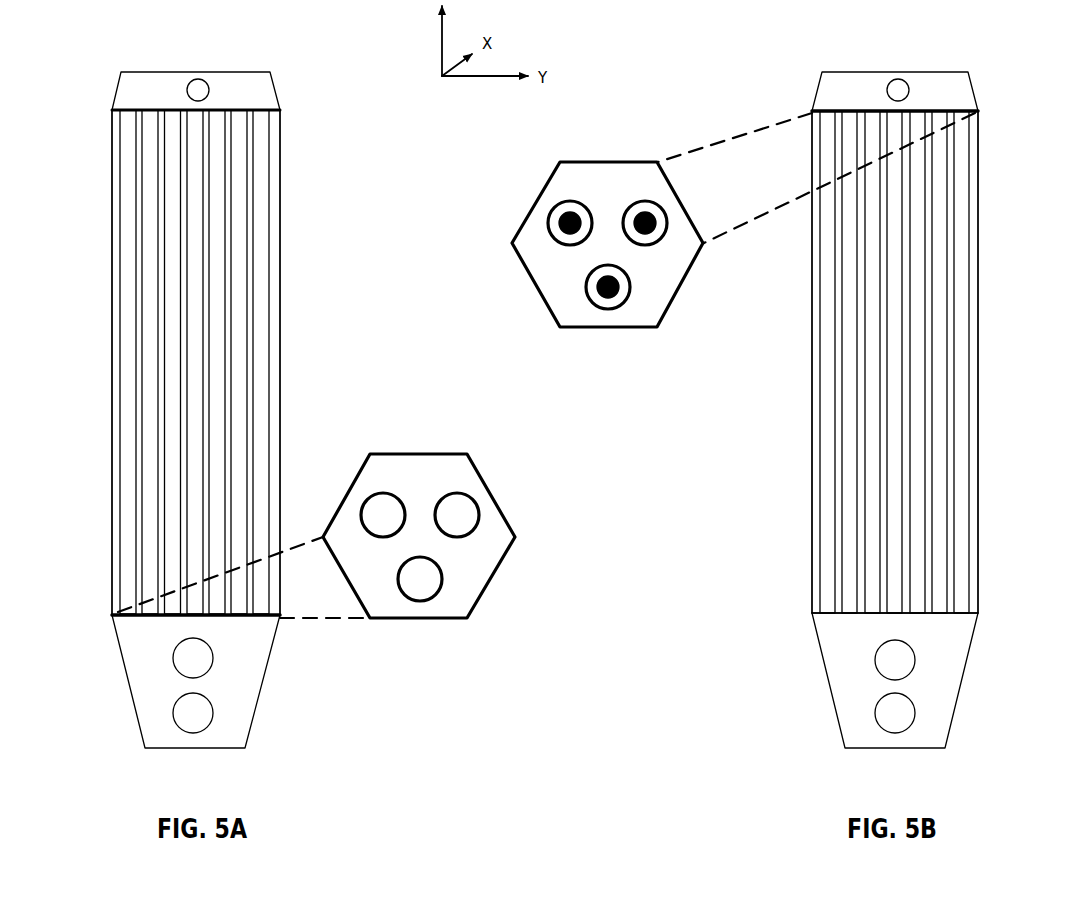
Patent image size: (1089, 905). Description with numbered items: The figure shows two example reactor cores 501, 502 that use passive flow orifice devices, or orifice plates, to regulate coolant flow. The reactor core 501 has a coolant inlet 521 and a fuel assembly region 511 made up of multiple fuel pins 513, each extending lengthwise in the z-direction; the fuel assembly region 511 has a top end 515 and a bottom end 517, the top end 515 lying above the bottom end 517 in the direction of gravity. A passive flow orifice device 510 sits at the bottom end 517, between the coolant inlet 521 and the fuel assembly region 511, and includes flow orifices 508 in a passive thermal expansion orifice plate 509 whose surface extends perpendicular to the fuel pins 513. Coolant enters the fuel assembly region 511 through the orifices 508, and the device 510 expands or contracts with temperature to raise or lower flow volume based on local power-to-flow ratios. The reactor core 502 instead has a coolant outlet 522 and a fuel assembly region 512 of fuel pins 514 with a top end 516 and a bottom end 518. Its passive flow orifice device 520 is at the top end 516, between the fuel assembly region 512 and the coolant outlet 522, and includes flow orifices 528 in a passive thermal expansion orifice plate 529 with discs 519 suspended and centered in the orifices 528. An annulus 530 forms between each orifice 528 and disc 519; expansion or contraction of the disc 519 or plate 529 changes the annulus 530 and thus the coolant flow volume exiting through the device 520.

In FIG. 5A, the reactor core 501 is at (86, 90).
In FIG. 5B, the reactor core 502 is at (756, 86).
In FIG. 5A, the flow orifices 508 is at (420, 586).
In FIG. 5A, the passive thermal expansion orifice plate 509 is at (476, 562).
In FIG. 5A, the passive flow orifice device 510 is at (487, 483).
In FIG. 5A, the fuel assembly region 511 is at (292, 214).
In FIG. 5B, the fuel assembly region 512 is at (988, 220).
In FIG. 5A, the fuel pins 513 is at (272, 355).
In FIG. 5B, the fuel pins 514 is at (976, 362).
In FIG. 5A, the top end 515 is at (245, 98).
In FIG. 5B, the top end 516 is at (838, 96).
In FIG. 5A, the bottom end 517 is at (243, 631).
In FIG. 5B, the bottom end 518 is at (834, 630).
In FIG. 5B, the disc 519 is at (598, 293).
In FIG. 5B, the passive flow orifice device 520 is at (542, 190).
In FIG. 5A, the coolant inlet 521 is at (211, 712).
In FIG. 5B, the coolant outlet 522 is at (906, 86).
In FIG. 5B, the flow orifices 528 is at (620, 302).
In FIG. 5B, the passive thermal expansion orifice plate 529 is at (653, 275).
In FIG. 5B, the annulus 530 is at (608, 300).